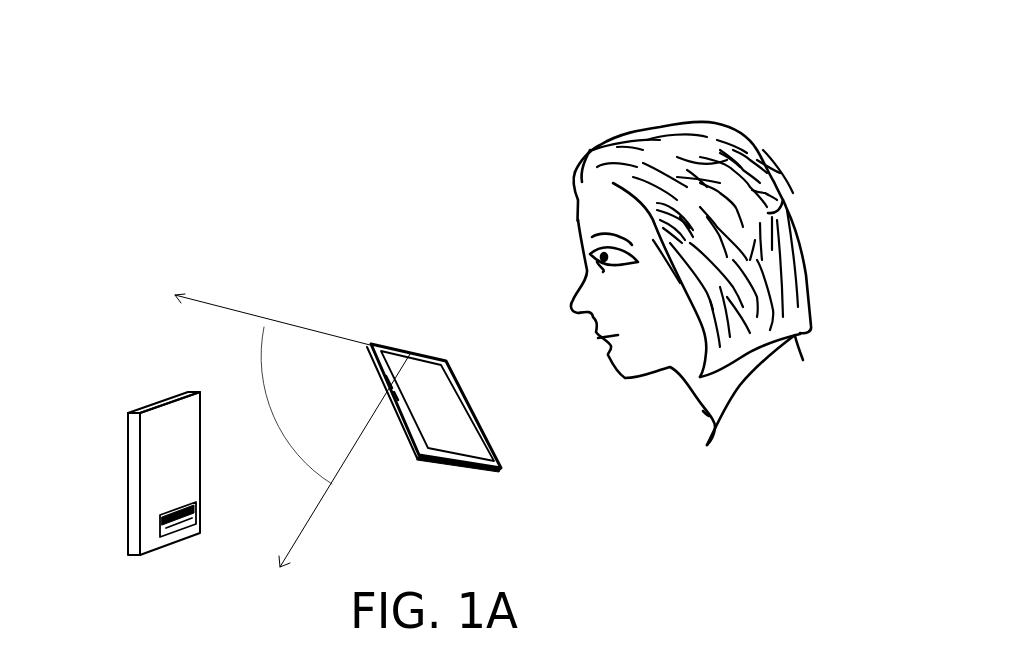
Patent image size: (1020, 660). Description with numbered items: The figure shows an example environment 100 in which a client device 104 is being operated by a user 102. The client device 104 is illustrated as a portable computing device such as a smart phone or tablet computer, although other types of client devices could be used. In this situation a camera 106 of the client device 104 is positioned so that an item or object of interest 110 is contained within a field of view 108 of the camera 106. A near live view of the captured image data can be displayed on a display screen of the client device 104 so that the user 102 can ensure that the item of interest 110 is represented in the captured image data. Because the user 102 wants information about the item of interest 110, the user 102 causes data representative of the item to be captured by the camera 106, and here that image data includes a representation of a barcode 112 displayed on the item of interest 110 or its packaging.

The environment 100 is at (487, 306).
The user 102 is at (750, 425).
The client device 104 is at (414, 388).
The camera 106 is at (407, 340).
The field of view 108 is at (327, 417).
The item of interest 110 is at (131, 455).
The barcode 112 is at (160, 522).